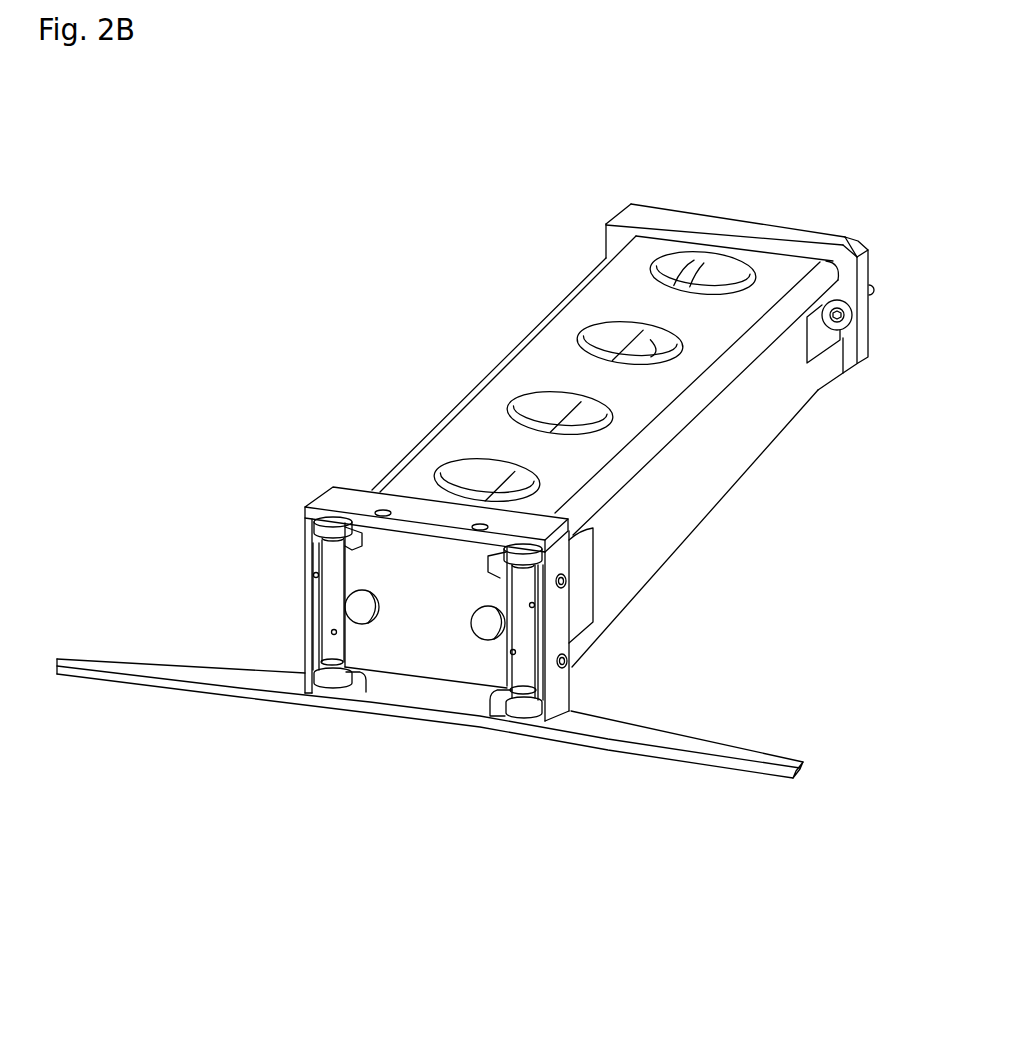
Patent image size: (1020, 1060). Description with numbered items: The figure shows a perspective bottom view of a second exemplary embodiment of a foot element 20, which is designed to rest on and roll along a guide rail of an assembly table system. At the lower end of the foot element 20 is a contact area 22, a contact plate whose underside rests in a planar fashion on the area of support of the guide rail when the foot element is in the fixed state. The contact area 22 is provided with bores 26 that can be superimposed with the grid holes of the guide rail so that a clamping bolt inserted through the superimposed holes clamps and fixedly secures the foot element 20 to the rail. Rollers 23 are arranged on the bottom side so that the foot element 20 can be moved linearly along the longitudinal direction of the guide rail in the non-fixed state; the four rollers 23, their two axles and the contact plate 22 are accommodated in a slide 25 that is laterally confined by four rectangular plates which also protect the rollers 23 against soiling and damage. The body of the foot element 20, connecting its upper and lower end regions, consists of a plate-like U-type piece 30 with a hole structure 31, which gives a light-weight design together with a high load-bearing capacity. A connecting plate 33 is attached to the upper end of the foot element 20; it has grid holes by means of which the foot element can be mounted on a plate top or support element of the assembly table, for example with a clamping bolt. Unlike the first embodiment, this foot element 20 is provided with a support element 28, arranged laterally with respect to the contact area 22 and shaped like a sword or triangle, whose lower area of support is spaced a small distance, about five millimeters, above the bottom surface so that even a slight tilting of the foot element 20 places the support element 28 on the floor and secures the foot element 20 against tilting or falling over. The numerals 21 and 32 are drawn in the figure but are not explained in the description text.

The foot element 20 is at (458, 925).
The front bracket / holder 21 is at (300, 448).
The contact area 22 is at (422, 690).
The rollers 23 is at (318, 520).
The slide 25 is at (312, 600).
The bores 26 is at (360, 598).
The support element 28 is at (710, 766).
The plate-like U-type piece 30 is at (743, 460).
The hole structure 31 is at (718, 262).
The end bar 32 is at (599, 208).
The connecting plate 33 is at (797, 222).